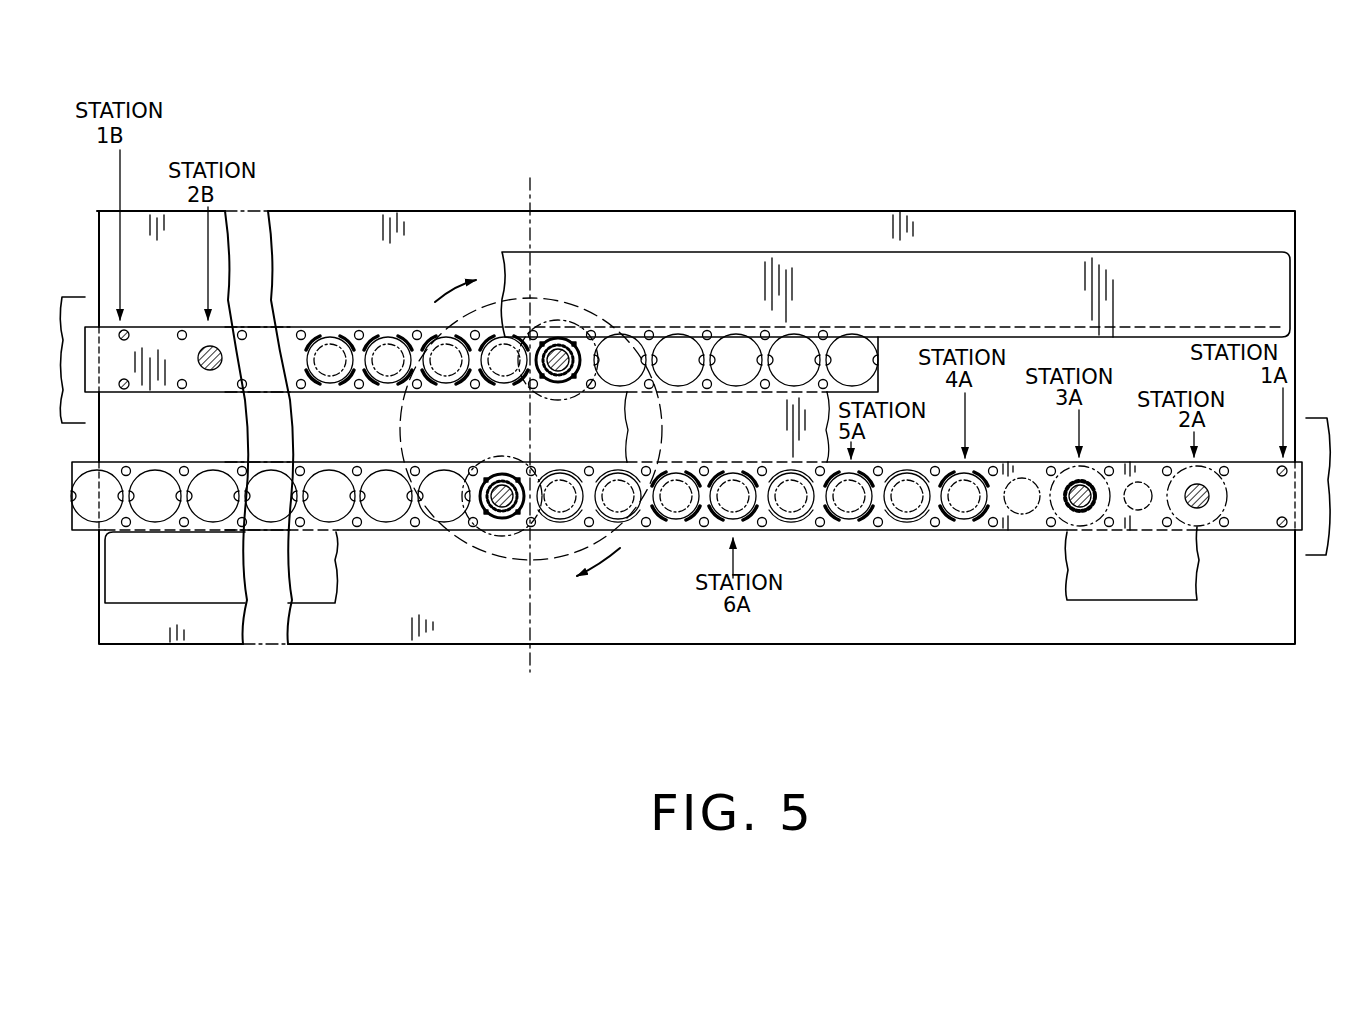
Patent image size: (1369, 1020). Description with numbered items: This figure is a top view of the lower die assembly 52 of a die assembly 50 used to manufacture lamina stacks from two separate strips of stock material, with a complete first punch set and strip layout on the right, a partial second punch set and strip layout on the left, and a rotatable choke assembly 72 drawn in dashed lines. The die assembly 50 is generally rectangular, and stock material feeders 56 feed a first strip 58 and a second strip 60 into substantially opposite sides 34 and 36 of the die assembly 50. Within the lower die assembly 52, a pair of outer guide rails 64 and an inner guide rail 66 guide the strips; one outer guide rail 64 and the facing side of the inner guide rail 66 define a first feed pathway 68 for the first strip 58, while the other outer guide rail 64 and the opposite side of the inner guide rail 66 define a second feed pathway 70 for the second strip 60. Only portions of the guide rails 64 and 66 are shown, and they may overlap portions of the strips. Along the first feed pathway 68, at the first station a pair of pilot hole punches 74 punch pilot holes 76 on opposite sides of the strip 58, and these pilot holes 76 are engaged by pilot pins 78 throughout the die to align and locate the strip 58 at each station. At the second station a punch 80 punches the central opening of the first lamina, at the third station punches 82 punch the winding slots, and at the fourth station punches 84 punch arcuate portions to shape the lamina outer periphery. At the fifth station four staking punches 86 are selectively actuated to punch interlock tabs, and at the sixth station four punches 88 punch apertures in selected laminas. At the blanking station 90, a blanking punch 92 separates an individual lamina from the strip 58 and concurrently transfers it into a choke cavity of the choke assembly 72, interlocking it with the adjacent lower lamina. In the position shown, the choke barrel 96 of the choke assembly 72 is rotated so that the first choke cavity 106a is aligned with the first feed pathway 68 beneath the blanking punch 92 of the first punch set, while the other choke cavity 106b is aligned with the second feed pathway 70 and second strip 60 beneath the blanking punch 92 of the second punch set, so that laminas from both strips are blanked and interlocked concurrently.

The side 34 is at (1305, 356).
The side 36 is at (97, 434).
The die assembly 50 is at (1090, 98).
The lower die assembly 52 is at (1180, 199).
The stock material feeder 56 is at (72, 297).
The first strip of stock material 58 is at (1323, 550).
The second strip of stock material 60 is at (155, 358).
The outer guide rail 64 is at (735, 300).
The inner guide rail 66 is at (749, 436).
The first feed pathway 68 is at (1210, 548).
The second feed pathway 70 is at (198, 421).
The choke assembly 72 is at (508, 250).
The pilot hole punch 74 is at (128, 333).
The pilot hole 76 is at (1229, 468).
The pilot pin 78 is at (357, 330).
The punch 80 is at (212, 371).
The punch 82 is at (1073, 505).
The punch 84 is at (950, 520).
The staking punch 86 is at (838, 520).
The punch 88 is at (712, 520).
The blanking station 90 is at (590, 309).
The blanking punch 92 is at (497, 470).
The choke barrel 96 is at (442, 147).
The first choke cavity 106a is at (500, 545).
The choke cavity 106b is at (547, 298).